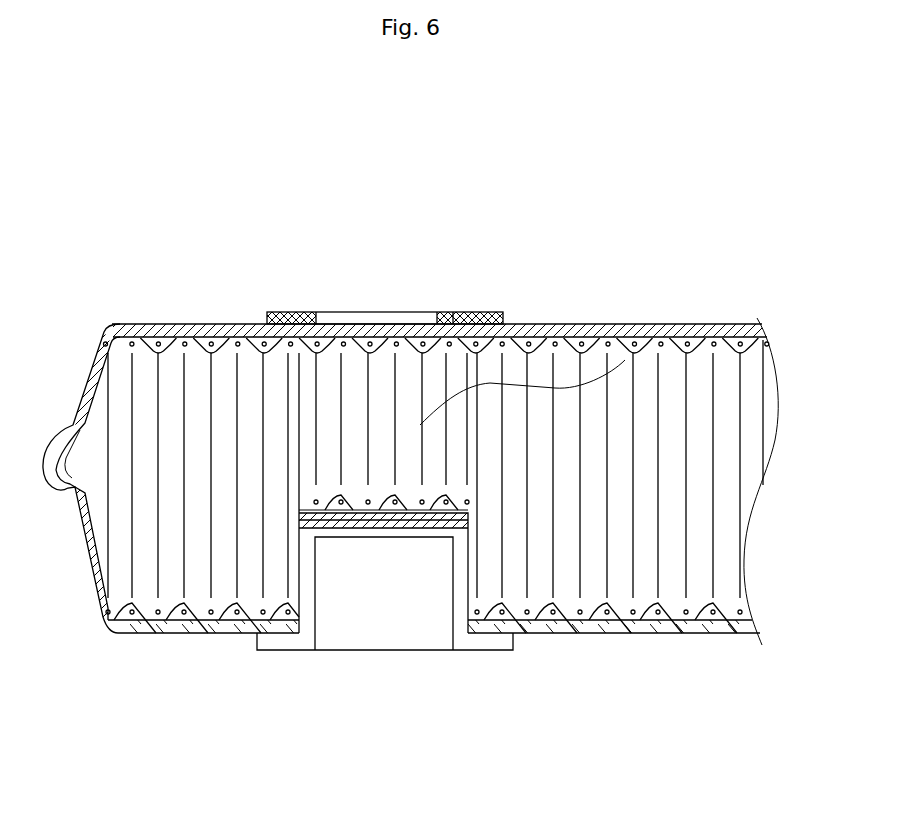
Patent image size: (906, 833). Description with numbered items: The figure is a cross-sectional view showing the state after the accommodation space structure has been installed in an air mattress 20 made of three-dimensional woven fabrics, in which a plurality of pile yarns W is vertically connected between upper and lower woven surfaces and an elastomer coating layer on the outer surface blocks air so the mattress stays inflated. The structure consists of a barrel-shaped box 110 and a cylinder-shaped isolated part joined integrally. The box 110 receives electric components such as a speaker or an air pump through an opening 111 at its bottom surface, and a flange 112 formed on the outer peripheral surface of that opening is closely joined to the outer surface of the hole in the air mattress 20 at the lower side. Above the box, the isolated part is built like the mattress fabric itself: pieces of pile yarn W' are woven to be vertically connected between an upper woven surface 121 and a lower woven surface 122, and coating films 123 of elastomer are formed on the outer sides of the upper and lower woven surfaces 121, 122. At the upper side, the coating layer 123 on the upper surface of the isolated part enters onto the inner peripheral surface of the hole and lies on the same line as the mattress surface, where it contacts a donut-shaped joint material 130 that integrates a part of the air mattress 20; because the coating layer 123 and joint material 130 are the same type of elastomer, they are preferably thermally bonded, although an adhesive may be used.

The air mattress 20 is at (93, 328).
The pile yarn W is at (198, 421).
The pile yarn W' is at (608, 428).
The joint material 130 is at (269, 311).
The coating film 123 is at (437, 313).
The upper woven surface 121 is at (473, 308).
The lower woven surface 122 is at (303, 504).
The box 110 is at (442, 653).
The opening 111 is at (397, 633).
The flange 112 is at (490, 652).